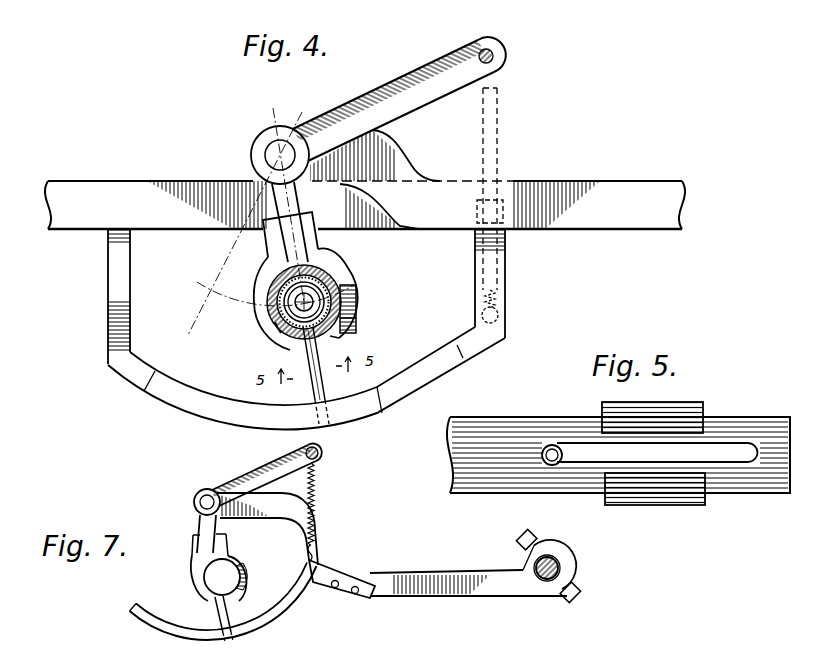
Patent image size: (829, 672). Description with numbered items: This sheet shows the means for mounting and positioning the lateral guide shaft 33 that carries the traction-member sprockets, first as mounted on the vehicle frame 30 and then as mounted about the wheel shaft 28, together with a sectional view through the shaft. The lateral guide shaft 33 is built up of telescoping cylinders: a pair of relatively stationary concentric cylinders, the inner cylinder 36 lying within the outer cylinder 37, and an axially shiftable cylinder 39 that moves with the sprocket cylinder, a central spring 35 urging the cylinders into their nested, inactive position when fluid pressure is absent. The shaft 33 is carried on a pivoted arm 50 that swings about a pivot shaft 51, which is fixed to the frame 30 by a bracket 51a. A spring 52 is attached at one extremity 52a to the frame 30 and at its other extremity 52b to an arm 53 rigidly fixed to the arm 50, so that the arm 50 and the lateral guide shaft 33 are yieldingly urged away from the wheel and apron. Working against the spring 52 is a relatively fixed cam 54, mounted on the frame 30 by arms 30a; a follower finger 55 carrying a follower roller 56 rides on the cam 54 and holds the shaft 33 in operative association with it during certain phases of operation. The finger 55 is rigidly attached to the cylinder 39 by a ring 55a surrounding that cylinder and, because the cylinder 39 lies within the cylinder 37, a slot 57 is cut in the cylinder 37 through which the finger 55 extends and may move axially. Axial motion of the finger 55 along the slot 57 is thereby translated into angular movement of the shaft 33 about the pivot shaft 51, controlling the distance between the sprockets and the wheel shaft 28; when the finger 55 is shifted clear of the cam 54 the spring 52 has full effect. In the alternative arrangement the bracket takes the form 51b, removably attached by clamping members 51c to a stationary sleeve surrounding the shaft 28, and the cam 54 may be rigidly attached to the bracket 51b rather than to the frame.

In FIG. 4, the frame 30 is at (573, 178).
In FIG. 4, the arms 30a is at (108, 282).
In FIG. 4, the lateral guide shaft 33 is at (340, 300).
In FIG. 7, the lateral guide shaft 33 is at (232, 577).
In FIG. 4, the spring 35 is at (330, 285).
In FIG. 4, the cylinder 36 is at (358, 307).
In FIG. 4, the cylinder 37 is at (272, 316).
In FIG. 4, the cylinder 39 is at (356, 318).
In FIG. 4, the pivoted arm 50 is at (298, 243).
In FIG. 5, the pivoted arm 50 is at (672, 400).
In FIG. 7, the pivoted arm 50 is at (215, 547).
In FIG. 4, the shaft 51 is at (266, 153).
In FIG. 7, the shaft 51 is at (198, 500).
In FIG. 4, the bracket 51a is at (393, 152).
In FIG. 7, the bracket 51b is at (420, 570).
In FIG. 7, the clamping members 51c is at (560, 557).
In FIG. 7, the shaft 28 is at (560, 570).
In FIG. 4, the spring 52 is at (490, 80).
In FIG. 7, the spring 52 is at (317, 480).
In FIG. 4, the extremity 52a is at (500, 317).
In FIG. 7, the extremity 52a is at (318, 548).
In FIG. 4, the extremity 52b is at (497, 52).
In FIG. 7, the extremity 52b is at (320, 460).
In FIG. 4, the arm 53 is at (427, 95).
In FIG. 7, the arm 53 is at (262, 474).
In FIG. 4, the cam 54 is at (242, 415).
In FIG. 7, the cam 54 is at (192, 632).
In FIG. 4, the follower finger 55 is at (305, 356).
In FIG. 5, the follower finger 55 is at (544, 450).
In FIG. 7, the follower finger 55 is at (230, 603).
In FIG. 4, the ring 55a is at (276, 330).
In FIG. 4, the follower roller 56 is at (332, 412).
In FIG. 5, the follower roller 56 is at (550, 448).
In FIG. 7, the follower roller 56 is at (235, 638).
In FIG. 4, the slot 57 is at (330, 336).
In FIG. 5, the slot 57 is at (722, 444).